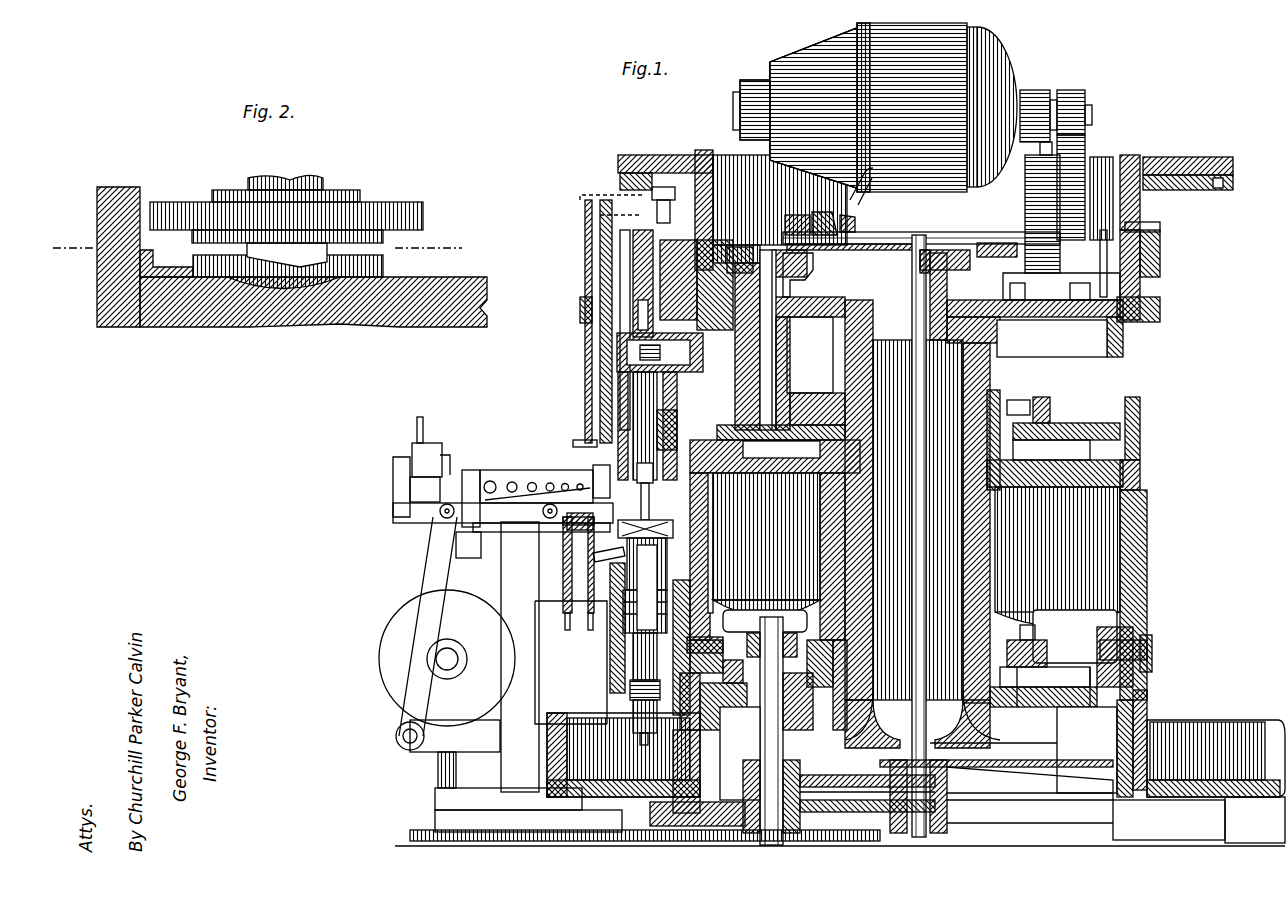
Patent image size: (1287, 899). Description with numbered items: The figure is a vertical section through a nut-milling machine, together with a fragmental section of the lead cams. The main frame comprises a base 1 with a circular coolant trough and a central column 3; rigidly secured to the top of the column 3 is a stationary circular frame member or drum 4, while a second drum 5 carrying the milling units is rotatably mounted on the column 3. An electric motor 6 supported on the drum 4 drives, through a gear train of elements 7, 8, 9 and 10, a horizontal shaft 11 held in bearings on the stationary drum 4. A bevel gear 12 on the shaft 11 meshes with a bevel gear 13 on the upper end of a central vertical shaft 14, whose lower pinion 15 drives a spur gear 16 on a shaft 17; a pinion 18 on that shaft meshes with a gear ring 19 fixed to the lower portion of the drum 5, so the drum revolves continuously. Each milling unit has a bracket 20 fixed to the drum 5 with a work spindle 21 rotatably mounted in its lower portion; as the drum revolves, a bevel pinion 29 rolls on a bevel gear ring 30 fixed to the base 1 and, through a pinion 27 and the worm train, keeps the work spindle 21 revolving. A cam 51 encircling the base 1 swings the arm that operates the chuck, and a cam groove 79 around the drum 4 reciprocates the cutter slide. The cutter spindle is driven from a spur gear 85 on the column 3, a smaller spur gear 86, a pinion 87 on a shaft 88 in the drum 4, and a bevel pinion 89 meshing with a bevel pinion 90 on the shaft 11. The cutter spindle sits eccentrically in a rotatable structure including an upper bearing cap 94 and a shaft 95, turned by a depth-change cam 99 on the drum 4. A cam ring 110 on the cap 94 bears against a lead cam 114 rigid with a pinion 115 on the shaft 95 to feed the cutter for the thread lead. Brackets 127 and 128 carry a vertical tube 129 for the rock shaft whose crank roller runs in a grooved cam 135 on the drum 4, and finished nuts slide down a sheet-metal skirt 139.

In FIG. 1, the base 1 is at (1145, 760).
In FIG. 1, the central column 3 is at (977, 381).
In FIG. 1, the circular frame member or drum 4 is at (1140, 322).
In FIG. 1, the drum 5 is at (1147, 546).
In FIG. 1, the electric motor 6 is at (930, 34).
In FIG. 1, the gear train element 7 is at (1082, 96).
In FIG. 1, the gear train element 8 is at (1085, 150).
In FIG. 1, the gear train element 9 is at (1040, 155).
In FIG. 1, the gear train element 10 is at (1052, 338).
In FIG. 1, the horizontal shaft 11 is at (905, 226).
In FIG. 1, the bevel gear 12 is at (866, 222).
In FIG. 1, the bevel gear 13 is at (910, 246).
In FIG. 1, the central vertical shaft 14 is at (925, 462).
In FIG. 2, the pinion 15 is at (97, 309).
In FIG. 1, the pinion 15 is at (950, 812).
In FIG. 1, the spur gear 16 is at (858, 777).
In FIG. 1, the shaft 17 is at (762, 737).
In FIG. 2, the pinion 18 is at (76, 253).
In FIG. 1, the pinion 18 is at (748, 645).
In FIG. 1, the gear ring 19 is at (1047, 652).
In FIG. 1, the bracket or frame member 20 is at (669, 556).
In FIG. 1, the work spindle 21 is at (653, 588).
In FIG. 1, the pinion 27 is at (1152, 650).
In FIG. 1, the bevel pinion 29 is at (1110, 645).
In FIG. 1, the bevel gear ring 30 is at (1087, 750).
In FIG. 1, the cam 51 is at (1148, 718).
In FIG. 1, the cam groove 79 is at (1162, 291).
In FIG. 1, the spur gear 85 is at (1085, 428).
In FIG. 1, the smaller spur gear 86 is at (1047, 402).
In FIG. 1, the pinion 87 is at (787, 415).
In FIG. 1, the shaft 88 is at (777, 337).
In FIG. 1, the bevel pinion 89 is at (735, 160).
In FIG. 1, the bevel pinion 90 is at (815, 272).
In FIG. 2, the upper bearing cap 94 is at (172, 305).
In FIG. 2, the shaft 95 is at (315, 178).
In FIG. 1, the cam 99 is at (1152, 228).
In FIG. 2, the cam ring 110 is at (385, 265).
In FIG. 2, the cam 114 is at (385, 238).
In FIG. 2, the pinion 115 is at (420, 203).
In FIG. 1, the bracket 127 is at (590, 428).
In FIG. 1, the bracket 128 is at (581, 313).
In FIG. 1, the vertical tube 129 is at (586, 266).
In FIG. 1, the grooved cam 135 is at (646, 155).
In FIG. 1, the sheet-metal skirt 139 is at (598, 600).